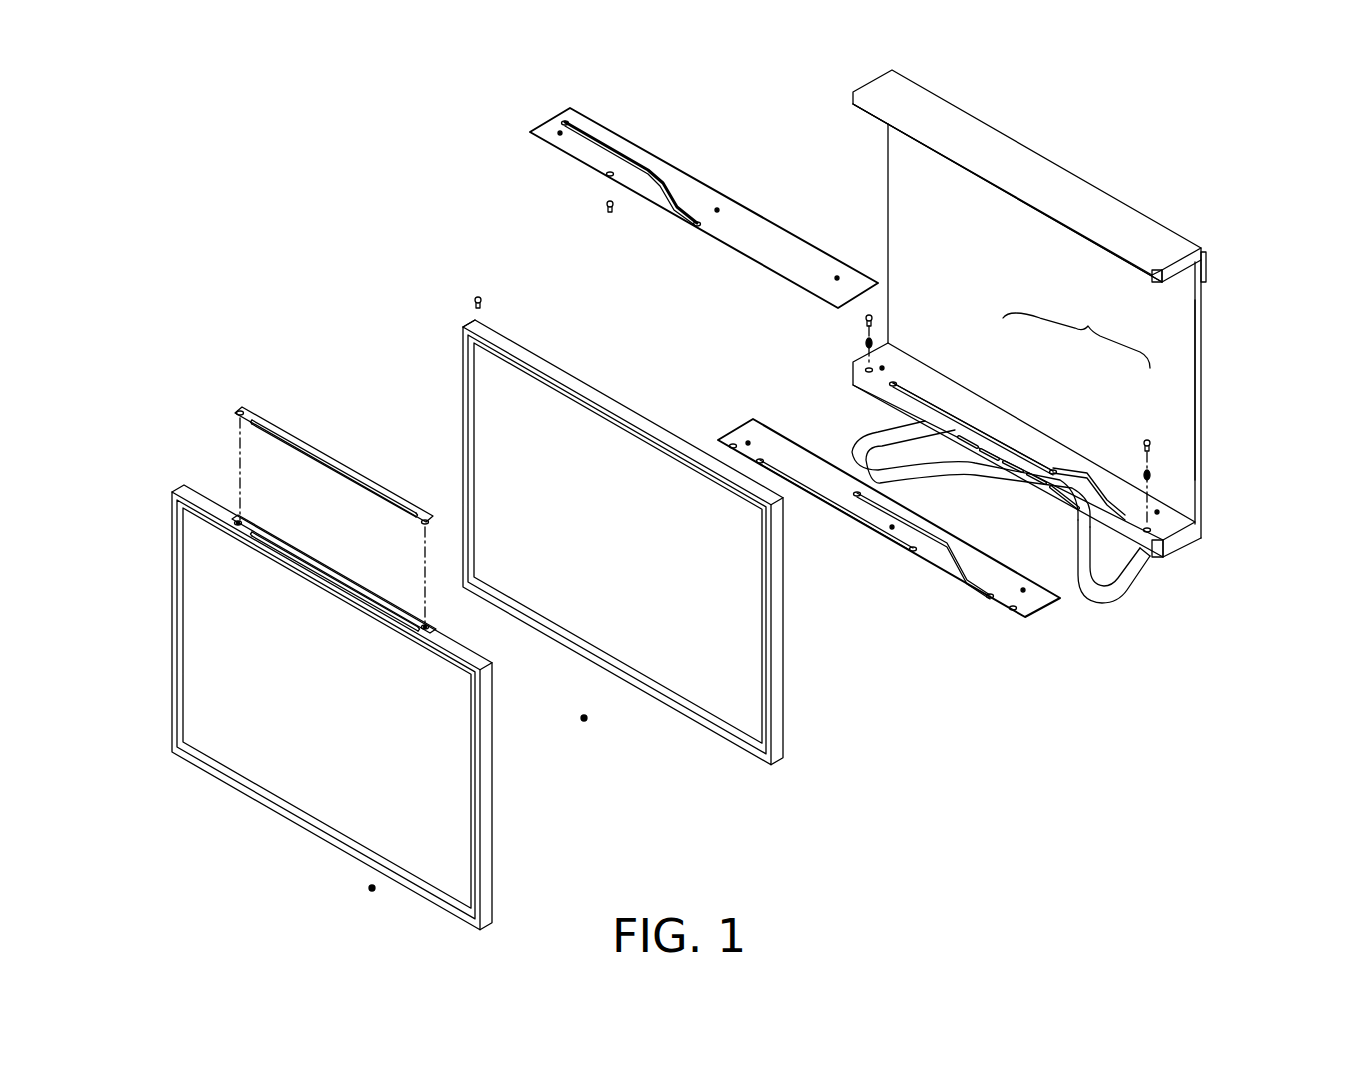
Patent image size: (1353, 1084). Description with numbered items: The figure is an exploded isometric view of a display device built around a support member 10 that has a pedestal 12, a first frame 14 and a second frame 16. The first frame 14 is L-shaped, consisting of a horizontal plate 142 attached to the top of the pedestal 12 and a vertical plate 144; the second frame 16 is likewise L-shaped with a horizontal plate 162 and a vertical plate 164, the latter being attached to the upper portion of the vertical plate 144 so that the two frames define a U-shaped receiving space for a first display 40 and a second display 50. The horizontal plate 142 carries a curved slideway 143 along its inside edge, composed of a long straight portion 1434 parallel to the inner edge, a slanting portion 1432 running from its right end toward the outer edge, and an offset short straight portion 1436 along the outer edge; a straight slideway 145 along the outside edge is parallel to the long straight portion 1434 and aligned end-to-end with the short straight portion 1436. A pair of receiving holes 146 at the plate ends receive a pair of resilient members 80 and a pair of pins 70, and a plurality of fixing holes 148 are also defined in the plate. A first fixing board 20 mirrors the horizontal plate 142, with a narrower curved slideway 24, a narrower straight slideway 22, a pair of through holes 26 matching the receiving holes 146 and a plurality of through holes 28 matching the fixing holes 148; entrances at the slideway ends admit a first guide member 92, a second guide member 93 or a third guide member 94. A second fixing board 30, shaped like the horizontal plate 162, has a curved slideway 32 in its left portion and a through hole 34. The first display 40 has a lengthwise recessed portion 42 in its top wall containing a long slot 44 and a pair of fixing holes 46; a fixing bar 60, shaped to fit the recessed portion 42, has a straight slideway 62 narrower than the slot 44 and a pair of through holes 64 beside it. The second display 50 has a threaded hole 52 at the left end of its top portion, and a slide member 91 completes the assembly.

The support member 10 is at (1037, 363).
The pedestal 12 is at (1112, 590).
The first frame 14 is at (1091, 331).
The second frame 16 is at (1070, 176).
The first fixing board 20 is at (872, 514).
The straight slideway 22 is at (885, 545).
The curved slideway 24 is at (965, 590).
The through holes 26 is at (1013, 610).
The through holes 28 is at (1022, 590).
The second fixing board 30 is at (656, 180).
The curved slideway 32 is at (583, 120).
The through hole 34 is at (606, 175).
The first display 40 is at (208, 612).
The recessed portion 42 is at (334, 562).
The long slot 44 is at (343, 582).
The fixing holes 46 is at (238, 520).
The second display 50 is at (579, 530).
The threaded hole 52 is at (482, 330).
The fixing bar 60 is at (303, 492).
The straight slideway 62 is at (305, 446).
The through holes 64 is at (238, 412).
The pins 70 is at (863, 318).
The resilient members 80 is at (862, 343).
The slide member 91 is at (603, 210).
The first guide member 92 is at (368, 888).
The second guide member 93 is at (586, 722).
The third guide member 94 is at (486, 297).
The horizontal plate 142 is at (1037, 448).
The curved slideway 143 is at (1028, 404).
The vertical plate 144 is at (1172, 338).
The straight slideway 145 is at (890, 385).
The receiving holes 146 is at (868, 371).
The fixing holes 148 is at (1160, 512).
The horizontal plate 162 is at (1130, 235).
The vertical plate 164 is at (1207, 268).
The slanting portion 1432 is at (1083, 480).
The long straight portion 1434 is at (992, 415).
The short straight portion 1436 is at (1123, 480).